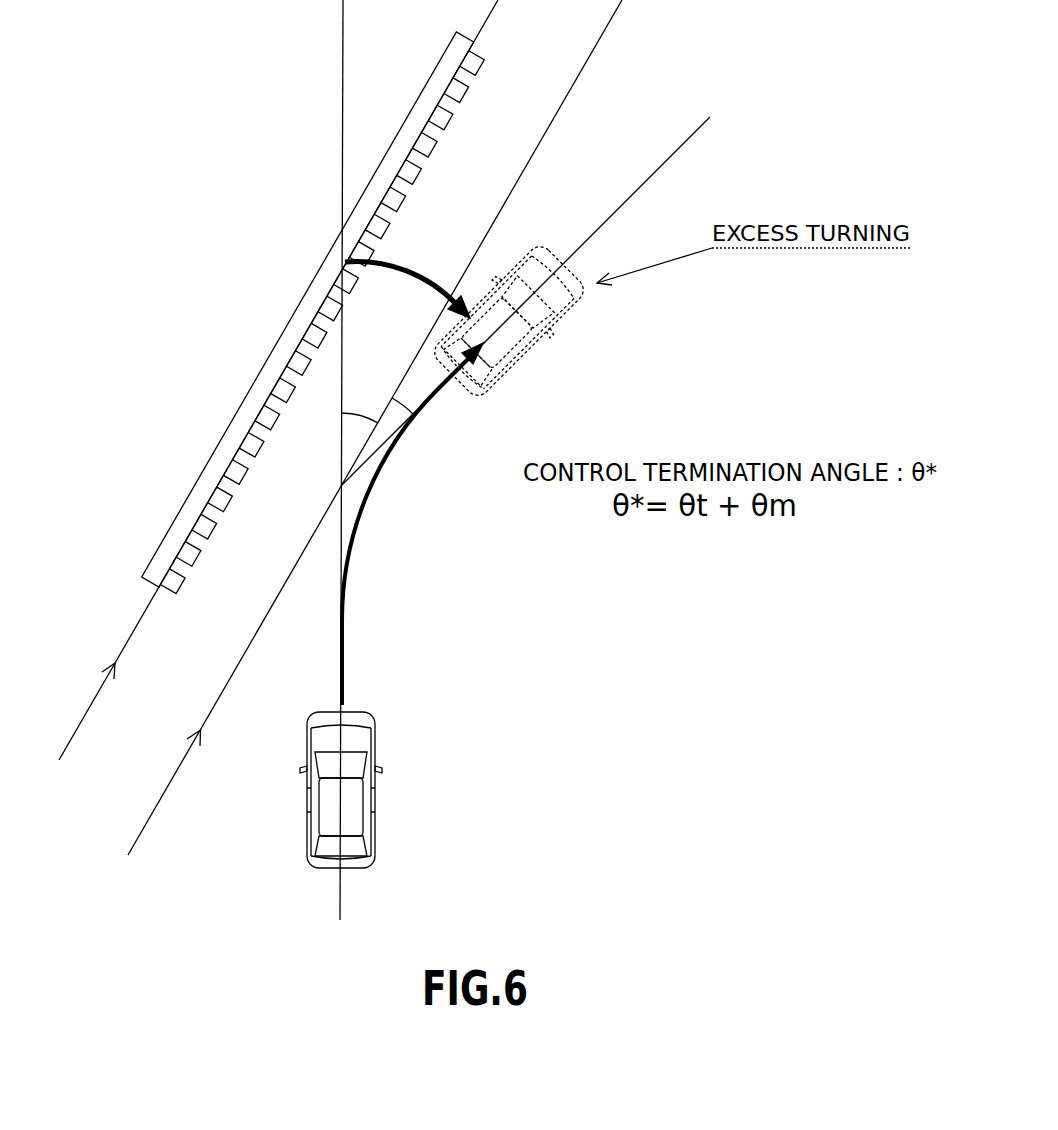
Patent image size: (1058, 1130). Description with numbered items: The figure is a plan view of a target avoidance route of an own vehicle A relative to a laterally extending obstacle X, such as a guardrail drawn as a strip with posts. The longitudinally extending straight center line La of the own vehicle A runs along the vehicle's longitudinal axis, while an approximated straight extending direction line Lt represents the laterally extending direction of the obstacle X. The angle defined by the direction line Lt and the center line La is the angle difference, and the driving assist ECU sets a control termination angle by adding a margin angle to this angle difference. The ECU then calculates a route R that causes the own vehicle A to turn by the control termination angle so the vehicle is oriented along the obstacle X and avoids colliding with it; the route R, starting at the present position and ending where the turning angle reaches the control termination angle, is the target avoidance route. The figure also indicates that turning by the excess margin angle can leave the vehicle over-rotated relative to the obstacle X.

The longitudinally extending straight center line La is at (342, 97).
The laterally extending obstacle X is at (313, 284).
The laterally extending direction line Lt is at (238, 666).
The route R is at (356, 538).
The own vehicle A is at (533, 358).